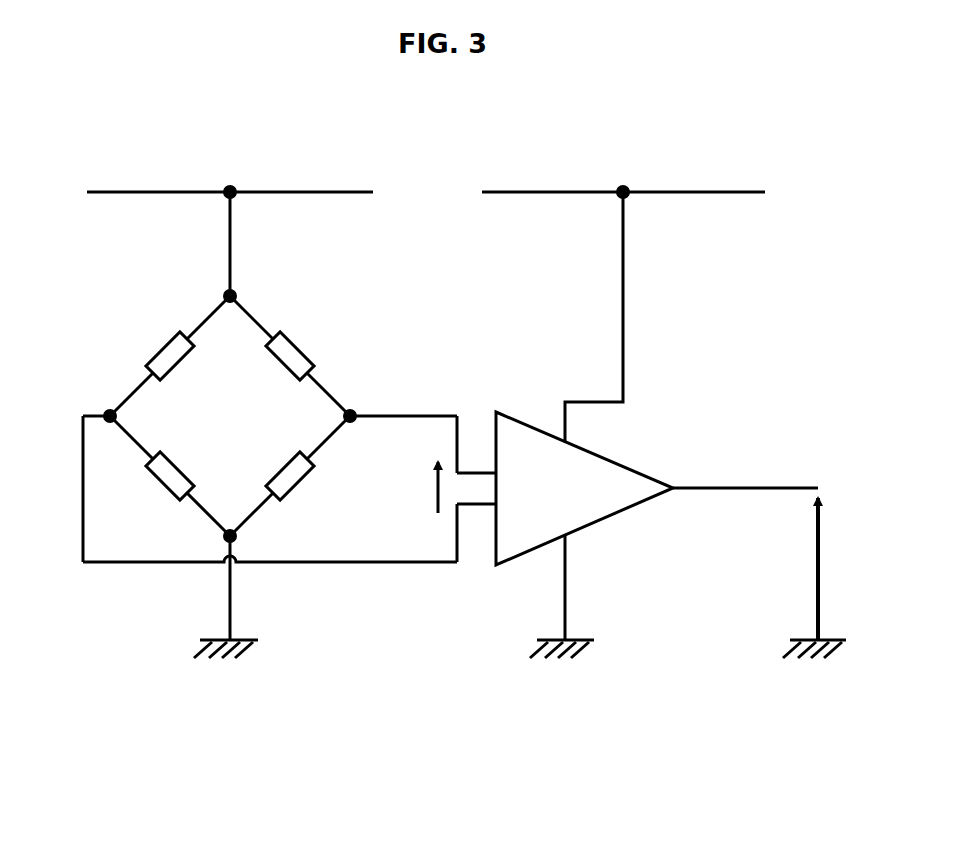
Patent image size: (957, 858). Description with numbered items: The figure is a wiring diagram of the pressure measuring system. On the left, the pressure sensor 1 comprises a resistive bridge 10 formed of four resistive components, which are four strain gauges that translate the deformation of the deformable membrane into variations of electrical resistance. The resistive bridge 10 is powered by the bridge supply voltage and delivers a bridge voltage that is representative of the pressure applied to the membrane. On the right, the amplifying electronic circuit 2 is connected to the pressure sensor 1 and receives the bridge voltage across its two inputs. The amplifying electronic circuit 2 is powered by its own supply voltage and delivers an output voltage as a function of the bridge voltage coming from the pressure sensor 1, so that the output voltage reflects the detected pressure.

The pressure sensor 1 is at (496, 745).
The amplifying electronic circuit 2 is at (818, 745).
The resistive bridge 10 is at (350, 361).